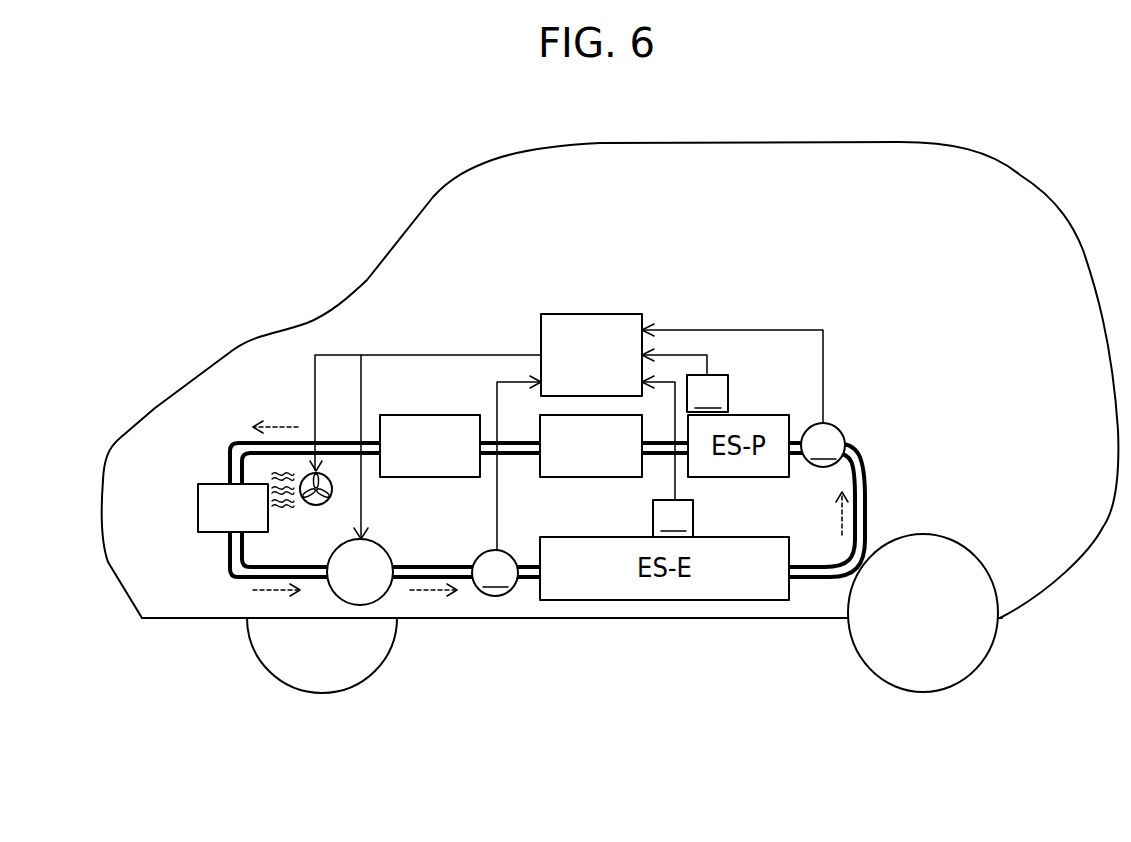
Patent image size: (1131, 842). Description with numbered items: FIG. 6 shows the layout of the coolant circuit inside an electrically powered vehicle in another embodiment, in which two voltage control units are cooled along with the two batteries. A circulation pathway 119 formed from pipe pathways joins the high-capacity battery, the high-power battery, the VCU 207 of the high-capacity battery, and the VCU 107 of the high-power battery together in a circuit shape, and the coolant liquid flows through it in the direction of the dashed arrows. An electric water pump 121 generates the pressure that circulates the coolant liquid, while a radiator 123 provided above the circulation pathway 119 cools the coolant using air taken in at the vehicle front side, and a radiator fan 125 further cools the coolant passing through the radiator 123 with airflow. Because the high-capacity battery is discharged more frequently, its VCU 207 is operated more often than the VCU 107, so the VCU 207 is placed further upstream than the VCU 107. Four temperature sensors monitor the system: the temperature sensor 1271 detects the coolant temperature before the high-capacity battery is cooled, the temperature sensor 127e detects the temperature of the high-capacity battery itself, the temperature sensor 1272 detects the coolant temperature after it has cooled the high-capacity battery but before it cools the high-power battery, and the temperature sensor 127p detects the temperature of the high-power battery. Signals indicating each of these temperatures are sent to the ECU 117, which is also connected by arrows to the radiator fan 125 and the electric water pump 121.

The ECU 117 is at (595, 314).
The VCU 107 is at (430, 415).
The VCU 207 is at (618, 477).
The radiator 123 is at (198, 514).
The radiator fan 125 is at (310, 506).
The electric water pump 121 is at (384, 548).
The temperature sensor 1271 is at (505, 550).
The temperature sensor 1272 is at (840, 428).
The temperature sensor 127e is at (693, 517).
The temperature sensor 127p is at (728, 393).
The circulation pathway 119 is at (866, 487).